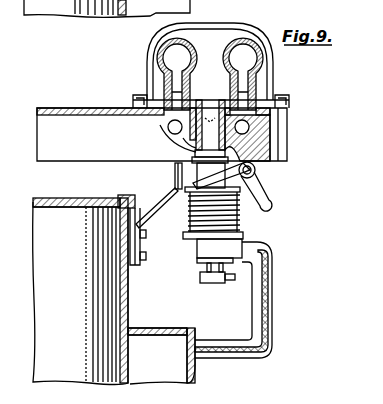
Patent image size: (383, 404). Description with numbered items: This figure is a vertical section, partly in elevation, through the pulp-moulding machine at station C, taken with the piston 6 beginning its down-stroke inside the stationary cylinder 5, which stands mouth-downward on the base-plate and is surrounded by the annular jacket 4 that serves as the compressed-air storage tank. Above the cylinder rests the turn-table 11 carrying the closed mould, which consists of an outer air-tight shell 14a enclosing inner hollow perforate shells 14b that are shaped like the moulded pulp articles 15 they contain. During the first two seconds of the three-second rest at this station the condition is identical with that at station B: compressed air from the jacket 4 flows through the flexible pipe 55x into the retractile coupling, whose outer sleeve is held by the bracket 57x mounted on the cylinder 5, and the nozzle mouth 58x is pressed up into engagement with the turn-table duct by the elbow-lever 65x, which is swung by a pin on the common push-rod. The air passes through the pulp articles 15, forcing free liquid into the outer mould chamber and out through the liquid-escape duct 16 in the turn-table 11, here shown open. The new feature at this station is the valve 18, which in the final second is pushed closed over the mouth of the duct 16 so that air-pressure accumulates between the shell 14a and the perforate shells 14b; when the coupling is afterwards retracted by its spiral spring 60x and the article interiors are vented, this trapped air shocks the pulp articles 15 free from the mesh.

The annular jacket 4 is at (161, 356).
The cylinder 5 is at (56, 206).
The hollow piston 6 is at (80, 291).
The turn-table 11 is at (66, 108).
The outer air-tight shell 14a is at (251, 27).
The inner perforate shells 14b is at (226, 57).
The moulded pulp article 15 is at (210, 74).
The liquid-escape duct 16 is at (210, 131).
The valve 18 is at (240, 200).
The flexible pipe 55x is at (272, 328).
The bracket 57x is at (160, 204).
The nozzle mouth 58x is at (196, 154).
The spiral spring 60x is at (190, 218).
The elbow-lever 65x is at (223, 283).